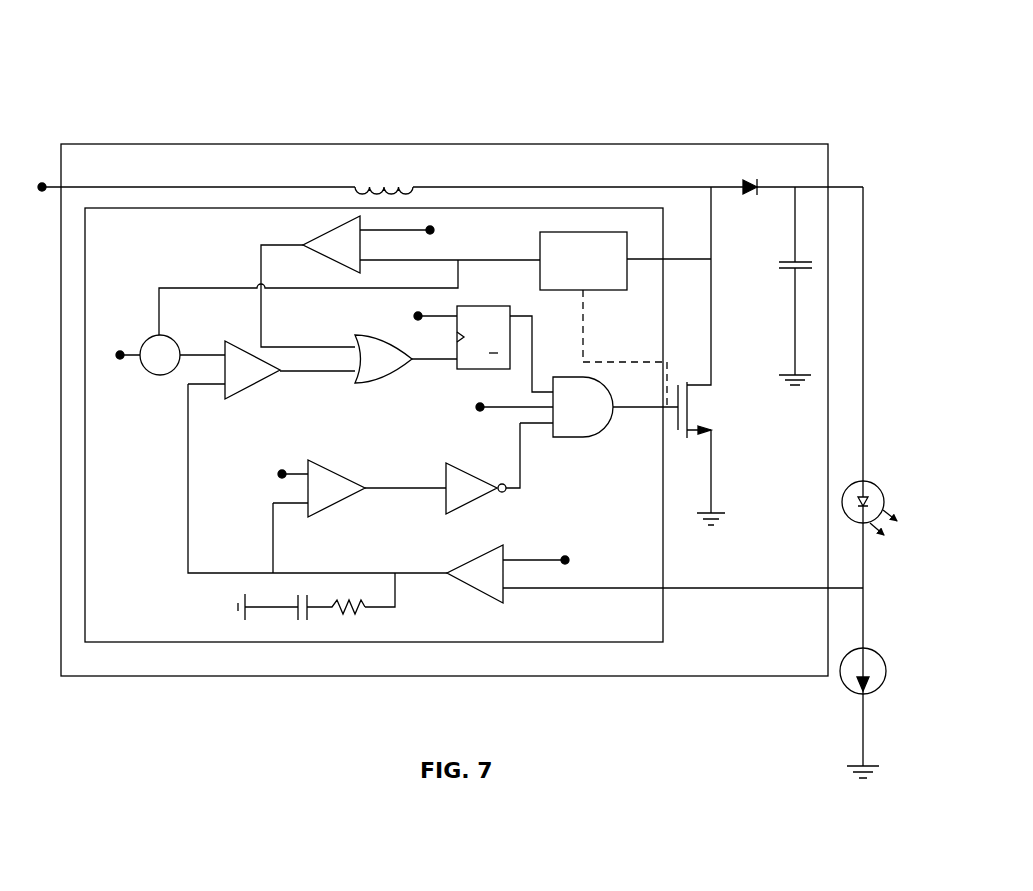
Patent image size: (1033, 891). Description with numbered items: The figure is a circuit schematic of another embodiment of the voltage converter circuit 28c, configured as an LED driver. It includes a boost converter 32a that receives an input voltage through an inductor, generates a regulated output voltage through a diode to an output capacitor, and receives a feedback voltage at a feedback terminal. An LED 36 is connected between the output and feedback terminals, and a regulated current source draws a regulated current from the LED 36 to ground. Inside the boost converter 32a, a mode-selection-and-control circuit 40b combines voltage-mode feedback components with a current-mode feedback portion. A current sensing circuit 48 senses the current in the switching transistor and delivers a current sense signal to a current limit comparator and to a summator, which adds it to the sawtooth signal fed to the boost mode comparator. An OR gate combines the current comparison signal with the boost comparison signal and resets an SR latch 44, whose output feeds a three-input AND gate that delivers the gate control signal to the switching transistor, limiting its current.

The voltage converter circuit 28c is at (187, 60).
The boost converter 32a is at (453, 410).
The mode-selection-and-control circuit 40b is at (381, 425).
The SR latch 44 is at (495, 306).
The current sensing circuit 48 is at (603, 319).
The LED 36 is at (875, 484).